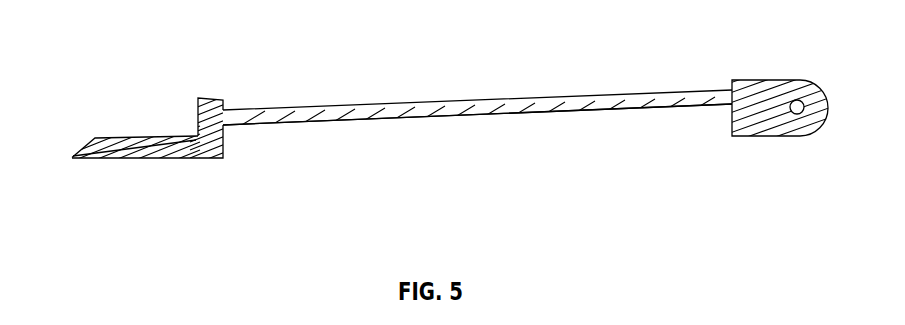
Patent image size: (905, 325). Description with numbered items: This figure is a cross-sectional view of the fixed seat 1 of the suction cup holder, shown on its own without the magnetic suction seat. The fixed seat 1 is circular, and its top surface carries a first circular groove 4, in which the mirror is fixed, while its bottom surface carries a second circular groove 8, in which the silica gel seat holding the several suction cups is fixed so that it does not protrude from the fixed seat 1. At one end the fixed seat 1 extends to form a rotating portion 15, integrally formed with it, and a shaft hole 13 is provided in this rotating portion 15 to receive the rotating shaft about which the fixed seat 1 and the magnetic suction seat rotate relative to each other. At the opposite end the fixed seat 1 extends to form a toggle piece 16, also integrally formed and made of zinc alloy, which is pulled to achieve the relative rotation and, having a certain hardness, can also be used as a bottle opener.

The fixed seat 1 is at (199, 113).
The first circular groove 4 is at (338, 103).
The second circular groove 8 is at (270, 148).
The shaft hole 13 is at (805, 110).
The rotating portion 15 is at (764, 86).
The toggle piece 16 is at (103, 148).